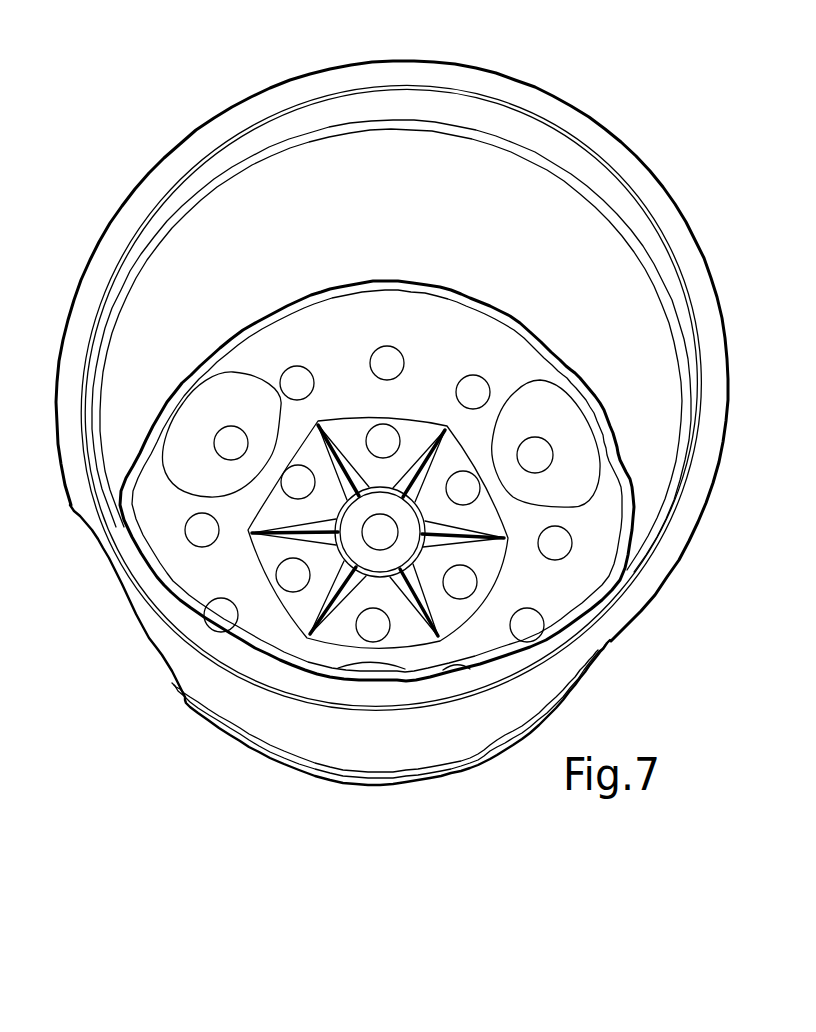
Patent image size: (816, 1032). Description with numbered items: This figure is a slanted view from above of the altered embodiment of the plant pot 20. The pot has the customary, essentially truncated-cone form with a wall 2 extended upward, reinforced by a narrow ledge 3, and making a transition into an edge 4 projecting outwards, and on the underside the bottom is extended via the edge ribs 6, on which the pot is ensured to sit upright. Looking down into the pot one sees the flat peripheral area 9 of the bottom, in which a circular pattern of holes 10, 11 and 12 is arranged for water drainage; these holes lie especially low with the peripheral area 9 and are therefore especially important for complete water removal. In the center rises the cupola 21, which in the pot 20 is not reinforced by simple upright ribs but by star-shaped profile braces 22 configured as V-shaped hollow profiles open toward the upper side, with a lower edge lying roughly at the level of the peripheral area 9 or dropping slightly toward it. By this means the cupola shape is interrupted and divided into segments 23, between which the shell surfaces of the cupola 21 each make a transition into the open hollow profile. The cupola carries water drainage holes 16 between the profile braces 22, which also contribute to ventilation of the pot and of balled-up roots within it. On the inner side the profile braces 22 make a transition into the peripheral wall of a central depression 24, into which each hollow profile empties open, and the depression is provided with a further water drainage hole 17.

The plant pot 20 is at (614, 76).
The rim 2 is at (462, 233).
The rim flange 4 is at (375, 77).
The narrow ledge 3 is at (389, 126).
The edge ribs 6 is at (377, 782).
The flat peripheral area 9 is at (365, 343).
The holes 10 is at (294, 378).
The holes 11 is at (393, 357).
The holes 12 is at (536, 452).
The water drainage holes 16 is at (463, 583).
The water drainage hole 17 is at (381, 528).
The cupola 21 is at (232, 570).
The profile braces 22 is at (343, 582).
The segments 23 is at (430, 562).
The depression 24 is at (318, 430).